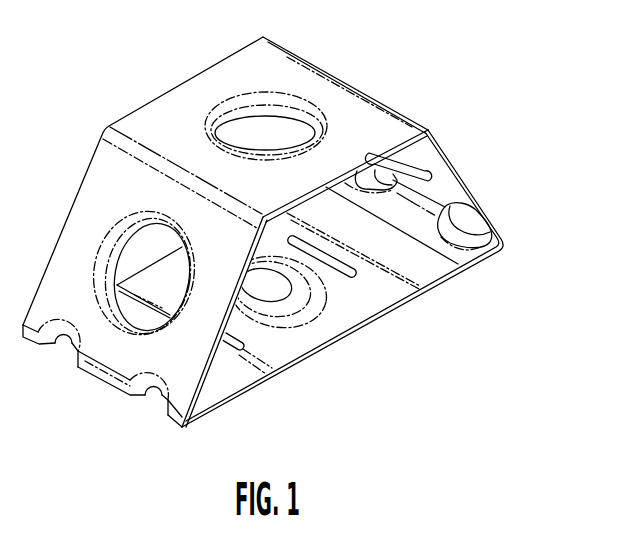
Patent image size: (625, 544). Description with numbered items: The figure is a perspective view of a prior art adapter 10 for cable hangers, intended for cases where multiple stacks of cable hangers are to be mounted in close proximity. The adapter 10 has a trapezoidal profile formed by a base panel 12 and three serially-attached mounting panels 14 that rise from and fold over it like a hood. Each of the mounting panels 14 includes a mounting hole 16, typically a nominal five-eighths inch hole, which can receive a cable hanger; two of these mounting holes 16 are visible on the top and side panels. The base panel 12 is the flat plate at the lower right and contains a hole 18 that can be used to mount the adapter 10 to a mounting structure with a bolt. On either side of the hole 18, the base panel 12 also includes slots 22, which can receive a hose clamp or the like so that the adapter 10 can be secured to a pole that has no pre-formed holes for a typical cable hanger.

The adapter 10 is at (454, 77).
The base panel 12 is at (373, 290).
The mounting panels 14 is at (165, 110).
The mounting hole 16 is at (272, 131).
The hole 18 is at (270, 283).
The slots 22 is at (258, 377).